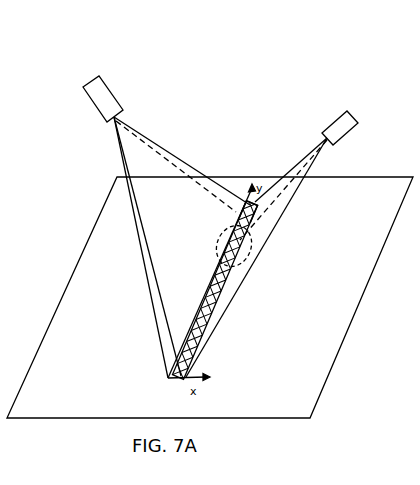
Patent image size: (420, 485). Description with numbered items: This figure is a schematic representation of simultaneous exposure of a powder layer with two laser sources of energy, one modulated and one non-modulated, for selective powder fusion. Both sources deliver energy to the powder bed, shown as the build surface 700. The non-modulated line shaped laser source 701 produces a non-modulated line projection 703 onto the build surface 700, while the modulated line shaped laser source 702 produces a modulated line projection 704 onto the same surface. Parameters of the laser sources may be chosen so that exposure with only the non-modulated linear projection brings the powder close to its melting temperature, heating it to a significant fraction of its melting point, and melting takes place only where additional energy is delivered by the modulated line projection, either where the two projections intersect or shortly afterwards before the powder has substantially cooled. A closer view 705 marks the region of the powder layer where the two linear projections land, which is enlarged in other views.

The build surface 700 is at (295, 350).
The non-modulated line shaped laser source 701 is at (102, 98).
The modulated line shaped laser source 702 is at (335, 124).
The non-modulated line projection 703 is at (203, 300).
The modulated line projection 704 is at (237, 226).
The closer view 705 is at (256, 245).